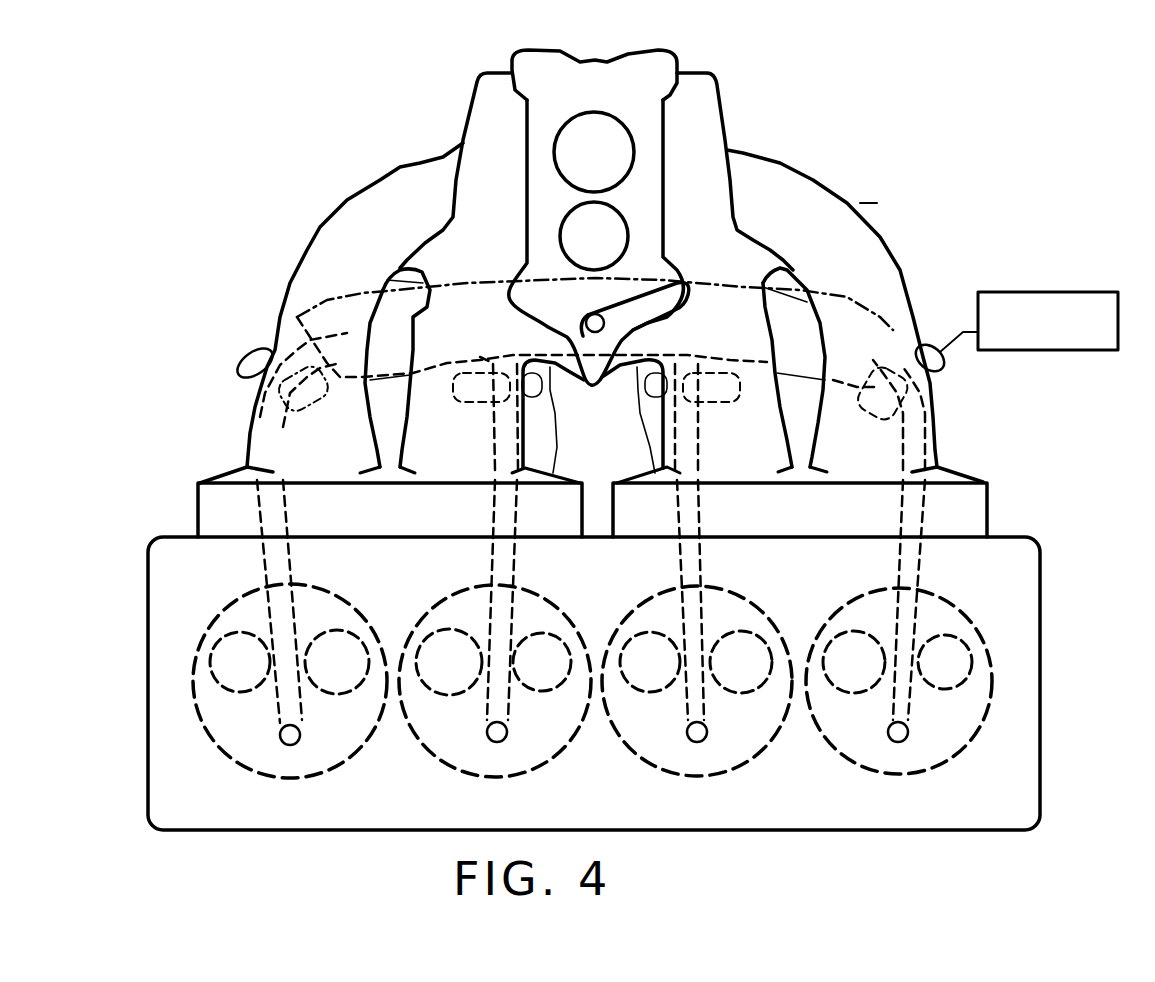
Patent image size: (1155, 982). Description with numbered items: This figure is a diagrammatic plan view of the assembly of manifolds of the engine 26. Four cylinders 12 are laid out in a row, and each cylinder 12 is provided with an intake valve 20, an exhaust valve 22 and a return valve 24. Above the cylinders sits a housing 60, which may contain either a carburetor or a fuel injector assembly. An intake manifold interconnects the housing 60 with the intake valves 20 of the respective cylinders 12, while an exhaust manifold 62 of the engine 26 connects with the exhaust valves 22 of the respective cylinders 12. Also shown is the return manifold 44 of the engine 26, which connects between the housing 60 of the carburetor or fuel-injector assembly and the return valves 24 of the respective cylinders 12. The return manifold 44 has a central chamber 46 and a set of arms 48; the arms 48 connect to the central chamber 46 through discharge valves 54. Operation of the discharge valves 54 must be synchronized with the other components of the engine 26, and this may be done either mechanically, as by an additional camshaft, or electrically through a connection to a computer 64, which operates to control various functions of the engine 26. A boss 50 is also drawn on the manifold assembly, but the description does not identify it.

The cylinders 12 is at (217, 750).
The intake valves 20 is at (442, 630).
The exhaust valves 22 is at (217, 625).
The return valves 24 is at (282, 743).
The engine 26 is at (946, 832).
The return manifold 44 is at (330, 294).
The central chamber 46 is at (880, 255).
The arms 48 is at (255, 556).
The mounting boss 50 is at (677, 283).
The discharge valves 54 is at (243, 373).
The housing 60 is at (663, 168).
The exhaust manifold 62 is at (557, 448).
The computer 64 is at (1028, 297).